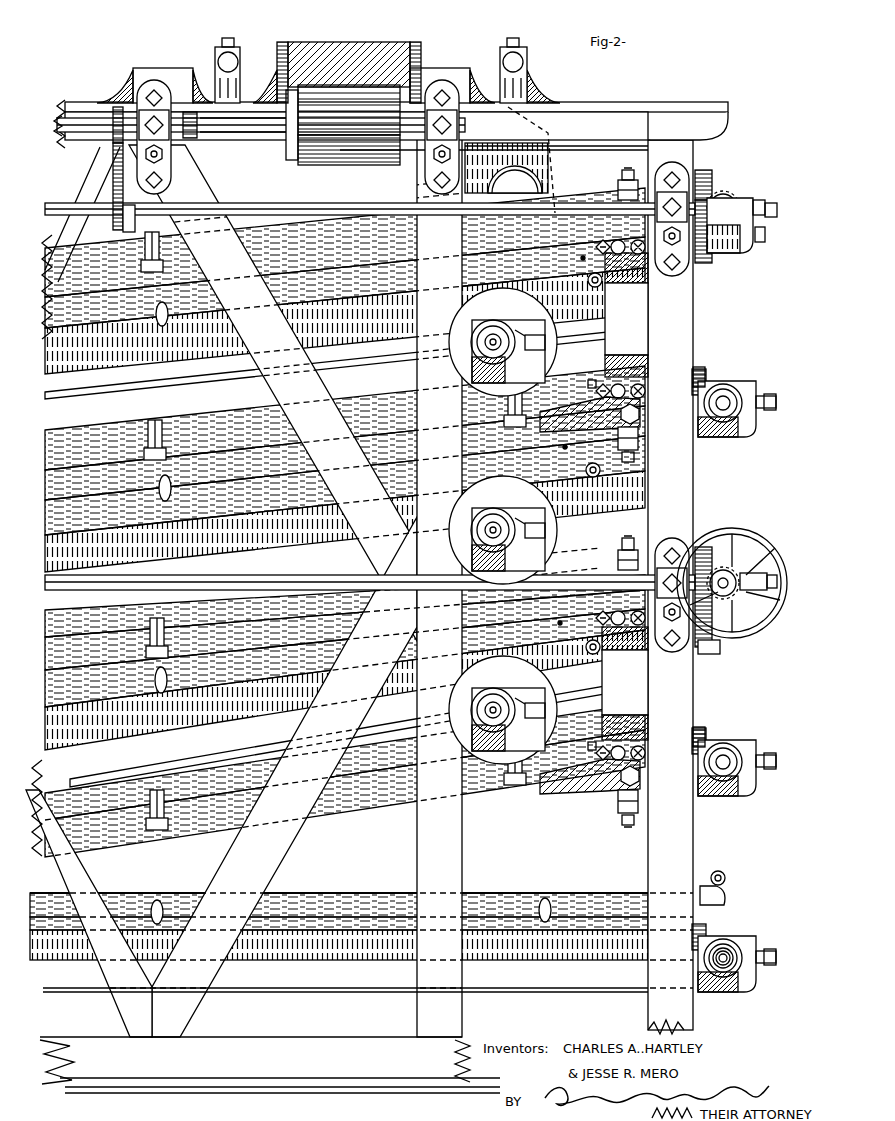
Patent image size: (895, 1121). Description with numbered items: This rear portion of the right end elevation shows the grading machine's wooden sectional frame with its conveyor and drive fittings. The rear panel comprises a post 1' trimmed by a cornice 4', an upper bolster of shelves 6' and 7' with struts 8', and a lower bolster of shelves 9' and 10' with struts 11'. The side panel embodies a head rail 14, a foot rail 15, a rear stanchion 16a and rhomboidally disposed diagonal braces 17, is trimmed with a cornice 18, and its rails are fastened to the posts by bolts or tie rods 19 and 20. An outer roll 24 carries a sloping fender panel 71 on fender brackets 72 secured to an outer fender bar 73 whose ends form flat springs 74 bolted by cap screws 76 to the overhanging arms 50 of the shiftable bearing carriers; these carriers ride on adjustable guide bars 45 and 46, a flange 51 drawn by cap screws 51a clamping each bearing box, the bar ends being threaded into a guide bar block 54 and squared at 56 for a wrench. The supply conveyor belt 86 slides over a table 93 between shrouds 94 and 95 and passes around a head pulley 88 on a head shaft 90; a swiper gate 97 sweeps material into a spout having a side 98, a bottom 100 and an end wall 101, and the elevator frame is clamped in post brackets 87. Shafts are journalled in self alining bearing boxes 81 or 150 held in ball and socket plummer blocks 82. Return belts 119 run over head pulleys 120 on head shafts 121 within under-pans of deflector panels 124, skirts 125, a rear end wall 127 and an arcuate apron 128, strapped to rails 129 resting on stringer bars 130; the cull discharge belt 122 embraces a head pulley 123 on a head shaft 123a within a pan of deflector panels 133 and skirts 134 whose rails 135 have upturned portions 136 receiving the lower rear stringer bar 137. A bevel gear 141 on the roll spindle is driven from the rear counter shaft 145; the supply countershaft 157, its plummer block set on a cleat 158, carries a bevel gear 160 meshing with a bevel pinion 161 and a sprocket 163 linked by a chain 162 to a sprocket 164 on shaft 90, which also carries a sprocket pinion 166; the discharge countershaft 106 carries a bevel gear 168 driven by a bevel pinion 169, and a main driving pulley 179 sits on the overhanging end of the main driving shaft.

The rear panel post 1' is at (658, 587).
The cornice 4' is at (696, 126).
The upper bolster shelf 6' is at (626, 275).
The upper bolster shelf 7' is at (626, 360).
The struts 8' is at (626, 319).
The lower bolster shelf 9' is at (625, 647).
The lower bolster shelf 10' is at (625, 719).
The struts 11' is at (625, 682).
The head rail 14 is at (215, 135).
The foot rail 15 is at (259, 1060).
The rear stanchion 16a is at (462, 1018).
The diagonal brace 17 is at (212, 200).
The cornice 18 is at (640, 102).
The bolt or tie rod 19 is at (648, 148).
The bolt or tie rod 20 is at (105, 1093).
The outer roll 24 is at (205, 266).
The guide bar 45 is at (587, 498).
The guide bar 46 is at (662, 263).
The overhanging arm 50 is at (617, 190).
The flange 51 is at (620, 174).
The cap screws 51a is at (628, 501).
The guide bar block 54 is at (645, 751).
The squared extremity 56 is at (587, 562).
The sloping fender panel 71 is at (345, 540).
The fender brackets 72 is at (160, 246).
The outer fender bar 73 is at (440, 798).
The flat springs 74 is at (660, 792).
The cap screws 76 is at (642, 414).
The bearing box 81 is at (154, 96).
The plummer block 82 is at (175, 165).
The supply conveyor belt 86 is at (349, 110).
The post brackets 87 is at (216, 52).
The head pulley 88 is at (298, 162).
The head shaft 90 is at (280, 133).
The table 93 is at (288, 105).
The shroud 94 is at (283, 42).
The shroud 95 is at (414, 42).
The swiper gate 97 is at (348, 42).
The spout side 98 is at (430, 55).
The spout bottom 100 is at (515, 181).
The end wall 101 is at (534, 181).
The counter shaft 106 is at (48, 578).
The return conveyor belt 119 is at (395, 366).
The head pulley 120 is at (496, 332).
The head shaft 121 is at (512, 338).
The cull discharge conveyor belt 122 is at (720, 940).
The head pulley 123 is at (742, 948).
The head shaft 123a is at (745, 952).
The sloping deflector panel 124 is at (55, 692).
The skirt 125 is at (48, 725).
The rear end wall 127 is at (583, 258).
The arcuate apron 128 is at (556, 332).
The rails 129 is at (592, 281).
The stringer bar 130 is at (595, 287).
The deflector panels 133 is at (322, 893).
The skirts 134 is at (378, 958).
The rails 135 is at (485, 893).
The upturned portions 136 is at (726, 895).
The lower rear stringer bar 137 is at (720, 875).
The bevel gear 141 is at (705, 372).
The rear counter shaft 145 is at (740, 200).
The bearing box 150 is at (723, 395).
The countershaft 157 is at (58, 205).
The cleat 158 is at (705, 265).
The bevel gear 160 is at (712, 172).
The bevel pinion 161 is at (727, 194).
The chain 162 is at (112, 165).
The sprocket 163 is at (125, 232).
The sprocket 164 is at (113, 125).
The sprocket pinion 166 is at (198, 120).
The bevel gear 168 is at (698, 548).
The bevel pinion 169 is at (768, 560).
The main driving pulley 179 is at (705, 654).